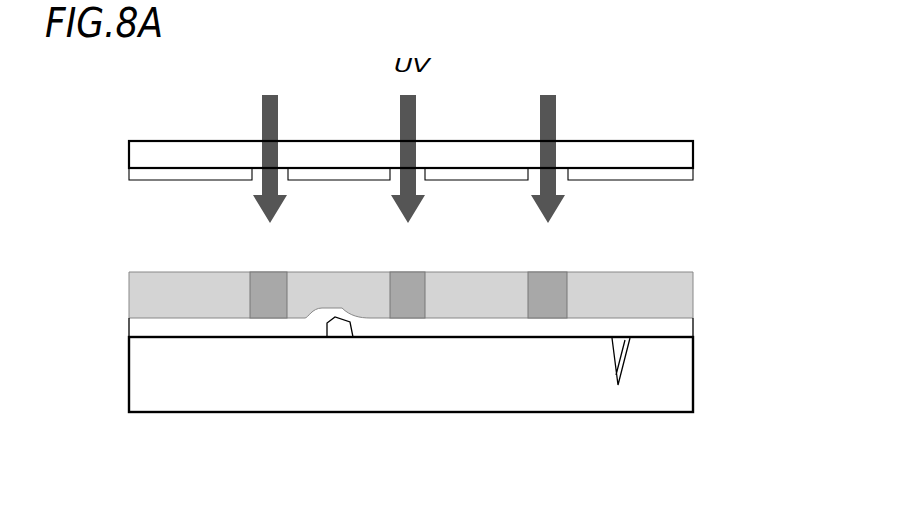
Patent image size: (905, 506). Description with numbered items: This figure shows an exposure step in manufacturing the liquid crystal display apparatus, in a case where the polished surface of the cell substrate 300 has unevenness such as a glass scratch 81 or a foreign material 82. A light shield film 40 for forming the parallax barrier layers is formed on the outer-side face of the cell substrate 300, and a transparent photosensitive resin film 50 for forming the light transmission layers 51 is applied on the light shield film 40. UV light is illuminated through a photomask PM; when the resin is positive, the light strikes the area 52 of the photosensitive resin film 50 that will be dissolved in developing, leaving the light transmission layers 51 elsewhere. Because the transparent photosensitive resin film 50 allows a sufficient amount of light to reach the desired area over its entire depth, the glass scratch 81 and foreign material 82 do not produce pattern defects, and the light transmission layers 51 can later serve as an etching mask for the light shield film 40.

The photomask PM is at (693, 153).
The light shield film 40 is at (453, 335).
The light transmission layer 51 is at (194, 305).
The area of the photosensitive resin film illuminated by UV light 52 is at (268, 310).
The cell substrate 300 is at (693, 377).
The foreign material 82 is at (333, 328).
The glass scratch 81 is at (622, 357).
The transparent photosensitive resin film 50 is at (173, 422).